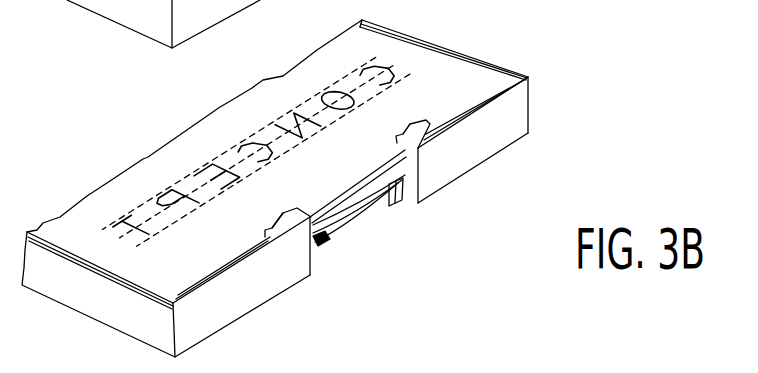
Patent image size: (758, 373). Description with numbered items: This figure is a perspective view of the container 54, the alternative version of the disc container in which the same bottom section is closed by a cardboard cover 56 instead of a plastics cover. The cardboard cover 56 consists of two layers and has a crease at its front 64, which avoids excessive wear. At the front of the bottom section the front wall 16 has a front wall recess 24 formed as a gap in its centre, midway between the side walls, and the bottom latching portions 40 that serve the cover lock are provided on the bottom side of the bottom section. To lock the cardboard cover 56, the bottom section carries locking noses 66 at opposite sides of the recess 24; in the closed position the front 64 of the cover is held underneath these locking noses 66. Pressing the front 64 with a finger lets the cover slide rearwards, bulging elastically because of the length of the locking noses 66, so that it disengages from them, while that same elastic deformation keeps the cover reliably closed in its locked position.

The front wall 16 is at (467, 150).
The front wall recess 24 is at (340, 248).
The bottom latching portions 40 is at (402, 210).
The container 54 is at (462, 38).
The cardboard cover 56 is at (100, 243).
The front of the cardboard cover 64 is at (358, 183).
The locking noses 66 is at (288, 210).